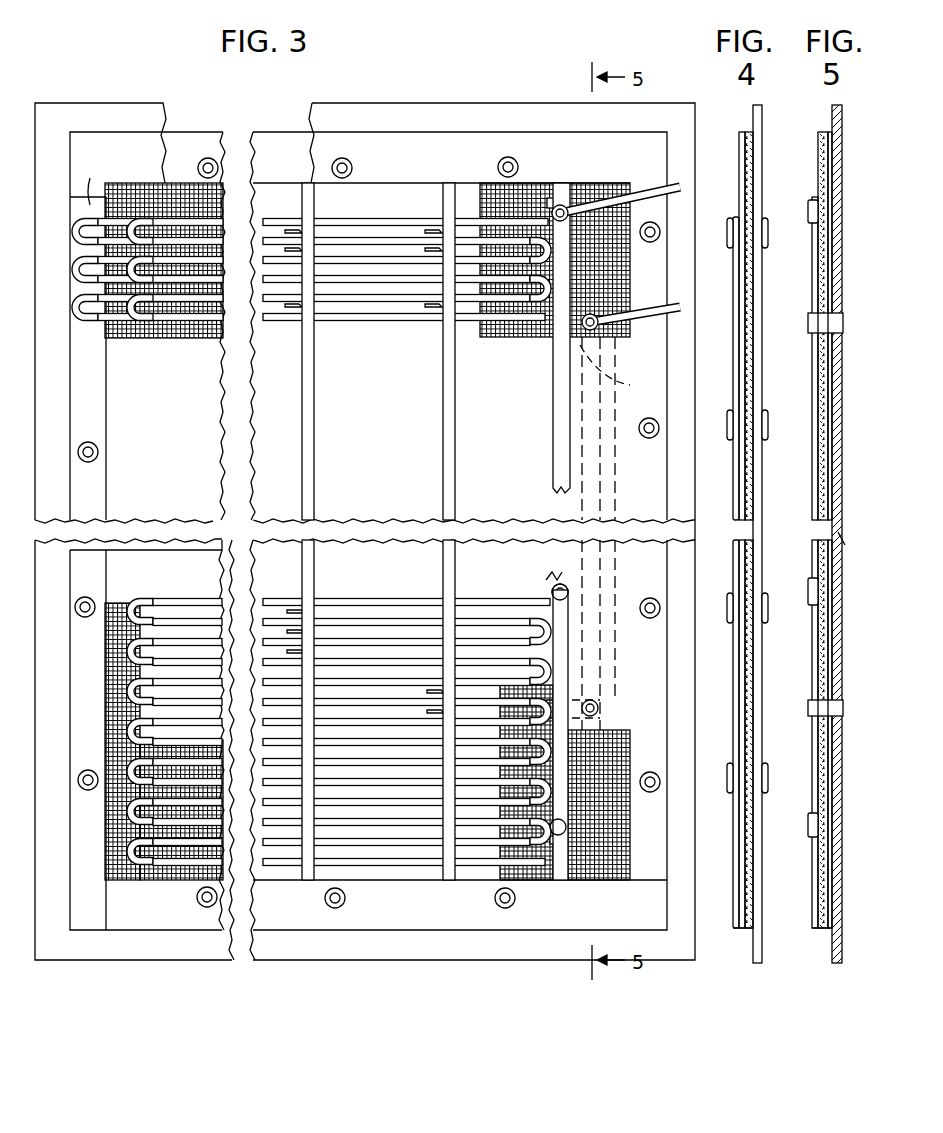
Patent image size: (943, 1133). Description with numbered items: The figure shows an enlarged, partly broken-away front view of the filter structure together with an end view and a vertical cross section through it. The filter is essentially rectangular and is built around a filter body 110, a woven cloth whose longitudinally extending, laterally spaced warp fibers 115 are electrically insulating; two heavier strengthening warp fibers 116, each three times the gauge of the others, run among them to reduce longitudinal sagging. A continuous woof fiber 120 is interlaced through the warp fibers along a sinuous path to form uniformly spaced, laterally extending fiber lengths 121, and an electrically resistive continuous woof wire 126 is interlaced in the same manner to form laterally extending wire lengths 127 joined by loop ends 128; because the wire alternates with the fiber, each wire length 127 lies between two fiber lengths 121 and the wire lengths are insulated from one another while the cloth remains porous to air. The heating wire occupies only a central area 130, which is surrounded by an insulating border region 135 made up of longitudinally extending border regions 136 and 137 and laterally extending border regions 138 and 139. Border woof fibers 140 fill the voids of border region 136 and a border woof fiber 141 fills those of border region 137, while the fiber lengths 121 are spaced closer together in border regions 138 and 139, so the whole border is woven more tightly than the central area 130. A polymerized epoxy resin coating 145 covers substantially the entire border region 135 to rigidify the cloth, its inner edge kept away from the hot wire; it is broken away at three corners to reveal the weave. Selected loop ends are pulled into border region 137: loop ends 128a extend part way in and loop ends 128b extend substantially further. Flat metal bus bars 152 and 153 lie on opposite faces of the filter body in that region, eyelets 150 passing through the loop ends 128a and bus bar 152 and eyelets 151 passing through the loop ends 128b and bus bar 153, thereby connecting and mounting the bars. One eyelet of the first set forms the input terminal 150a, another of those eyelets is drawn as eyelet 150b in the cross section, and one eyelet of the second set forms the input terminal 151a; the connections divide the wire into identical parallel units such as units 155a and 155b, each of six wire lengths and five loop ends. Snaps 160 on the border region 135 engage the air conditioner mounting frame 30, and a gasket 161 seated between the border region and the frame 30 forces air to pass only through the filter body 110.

In FIG. 3, the air conditioner mounting frame 30 is at (655, 0).
In FIG. 4, the air conditioner mounting frame 30 is at (756, 962).
In FIG. 5, the air conditioner mounting frame 30 is at (836, 962).
In FIG. 3, the filter body 110 is at (468, 115).
In FIG. 4, the filter body 110 is at (735, 150).
In FIG. 5, the filter body 110 is at (818, 150).
In FIG. 3, the warp fibers 115 is at (175, 183).
In FIG. 4, the warp fibers 115 is at (749, 530).
In FIG. 5, the warp fibers 115 is at (800, 530).
In FIG. 3, the strengthening warp fibers 116 is at (308, 388).
In FIG. 3, the woof fiber 120 is at (286, 220).
In FIG. 3, the fiber lengths 121 is at (285, 322).
In FIG. 3, the woof wire 126 is at (385, 834).
In FIG. 3, the wire lengths 127 is at (230, 200).
In FIG. 3, the loop ends 128 is at (536, 280).
In FIG. 3, the loop ends 128a is at (560, 200).
In FIG. 3, the loop ends 128b is at (583, 690).
In FIG. 3, the central area 130 is at (398, 481).
In FIG. 3, the insulating border region 135 is at (100, 815).
In FIG. 3, the longitudinally extending border region 136 is at (97, 330).
In FIG. 3, the longitudinally extending border region 137 is at (616, 838).
In FIG. 3, the laterally extending border region 138 is at (486, 192).
In FIG. 3, the laterally extending border region 139 is at (203, 866).
In FIG. 3, the border woof fibers 140 is at (105, 182).
In FIG. 3, the border woof fiber 141 is at (620, 263).
In FIG. 3, the epoxy resin coating 145 is at (428, 120).
In FIG. 3, the eyelets 150 is at (562, 582).
In FIG. 5, the eyelets 150 is at (810, 593).
In FIG. 3, the electrical input terminal 150a is at (564, 205).
In FIG. 5, the electrical input terminal 150a is at (810, 213).
In FIG. 3, the lower fastener 150b is at (631, 318).
In FIG. 5, the lower fastener 150b is at (840, 322).
In FIG. 3, the eyelets 151 is at (600, 710).
In FIG. 5, the eyelets 151 is at (838, 703).
In FIG. 3, the electrical input terminal 151a is at (603, 338).
In FIG. 3, the bus bar 152 is at (560, 427).
In FIG. 4, the bus bar 152 is at (733, 833).
In FIG. 5, the bus bar 152 is at (817, 487).
In FIG. 3, the bus bar 153 is at (617, 490).
In FIG. 5, the bus bar 153 is at (835, 535).
In FIG. 3, the unit 155a is at (410, 247).
In FIG. 3, the unit 155b is at (393, 618).
In FIG. 3, the snaps 160 is at (505, 156).
In FIG. 4, the snaps 160 is at (766, 232).
In FIG. 4, the gasket 161 is at (745, 930).
In FIG. 5, the gasket 161 is at (827, 933).